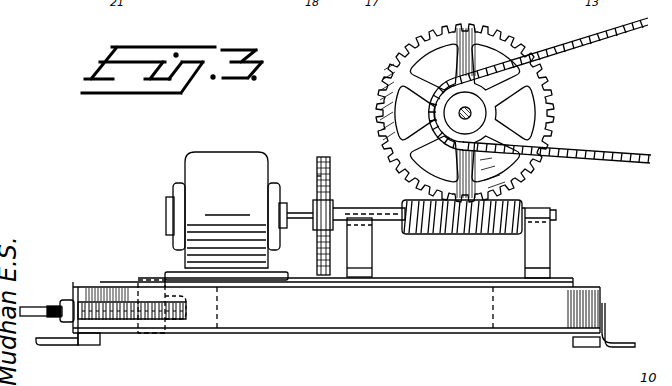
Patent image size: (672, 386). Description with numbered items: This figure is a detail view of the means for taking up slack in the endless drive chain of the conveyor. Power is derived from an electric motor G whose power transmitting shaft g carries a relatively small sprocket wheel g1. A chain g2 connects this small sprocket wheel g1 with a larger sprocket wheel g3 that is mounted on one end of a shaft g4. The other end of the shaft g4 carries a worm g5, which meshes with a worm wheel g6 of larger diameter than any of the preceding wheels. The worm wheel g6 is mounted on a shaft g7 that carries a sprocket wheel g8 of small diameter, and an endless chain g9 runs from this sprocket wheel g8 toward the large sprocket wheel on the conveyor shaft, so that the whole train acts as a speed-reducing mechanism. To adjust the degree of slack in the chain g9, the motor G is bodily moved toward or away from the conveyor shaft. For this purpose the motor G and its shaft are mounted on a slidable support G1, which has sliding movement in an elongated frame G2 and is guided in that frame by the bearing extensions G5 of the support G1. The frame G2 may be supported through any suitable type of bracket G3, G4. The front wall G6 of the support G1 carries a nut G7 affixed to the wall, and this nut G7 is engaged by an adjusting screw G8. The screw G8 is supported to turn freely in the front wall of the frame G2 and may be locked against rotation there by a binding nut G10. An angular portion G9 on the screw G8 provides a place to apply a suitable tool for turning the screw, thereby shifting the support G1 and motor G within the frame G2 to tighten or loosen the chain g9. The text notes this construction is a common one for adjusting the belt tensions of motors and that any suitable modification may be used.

The electric motor G is at (226, 210).
The slidable support G1 is at (152, 281).
The elongated frame G2 is at (336, 302).
The bracket G3 is at (48, 338).
The bracket G4 is at (101, 336).
The bearing extensions G5 is at (218, 333).
The front wall G6 is at (180, 306).
The nut G7 is at (166, 333).
The adjusting screw G8 is at (123, 290).
The angular portion G9 is at (38, 306).
The binding nut G10 is at (66, 300).
The power transmitting shaft g is at (308, 221).
The sprocket wheel g1 is at (334, 199).
The chain g2 is at (330, 158).
The sprocket wheel g3 is at (317, 177).
The shaft g4 is at (401, 227).
The worm g5 is at (486, 234).
The worm wheel g6 is at (534, 172).
The shaft g7 is at (472, 113).
The sprocket wheel g8 is at (500, 119).
The endless chain g9 is at (607, 38).